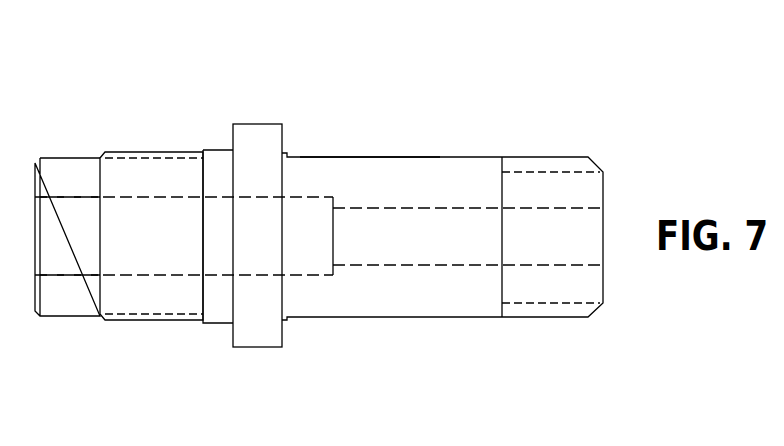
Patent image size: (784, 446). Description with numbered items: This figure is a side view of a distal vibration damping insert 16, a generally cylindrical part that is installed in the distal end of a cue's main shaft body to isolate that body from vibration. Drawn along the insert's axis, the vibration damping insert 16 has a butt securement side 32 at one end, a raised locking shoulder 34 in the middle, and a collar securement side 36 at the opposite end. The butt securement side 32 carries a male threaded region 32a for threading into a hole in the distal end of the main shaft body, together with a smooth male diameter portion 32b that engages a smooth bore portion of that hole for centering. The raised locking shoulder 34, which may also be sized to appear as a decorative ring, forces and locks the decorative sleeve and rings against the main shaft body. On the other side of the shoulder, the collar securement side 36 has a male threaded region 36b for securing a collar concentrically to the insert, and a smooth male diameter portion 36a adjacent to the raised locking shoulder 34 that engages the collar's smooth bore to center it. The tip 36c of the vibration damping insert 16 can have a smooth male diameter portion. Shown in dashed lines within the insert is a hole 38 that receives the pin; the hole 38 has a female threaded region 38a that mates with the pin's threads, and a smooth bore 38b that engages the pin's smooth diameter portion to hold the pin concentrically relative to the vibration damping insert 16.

The vibration damping insert 16 is at (635, 100).
The butt securement side 32 is at (439, 183).
The male threaded region 32a is at (545, 157).
The smooth male diameter portion 32b is at (373, 157).
The raised locking shoulder 34 is at (255, 124).
The collar securement side 36 is at (138, 233).
The smooth male diameter portion 36a is at (215, 150).
The male threaded region 36b is at (163, 153).
The tip 36c is at (65, 157).
The hole 38 is at (168, 275).
The female threaded region 38a is at (395, 265).
The smooth bore 38b is at (72, 275).